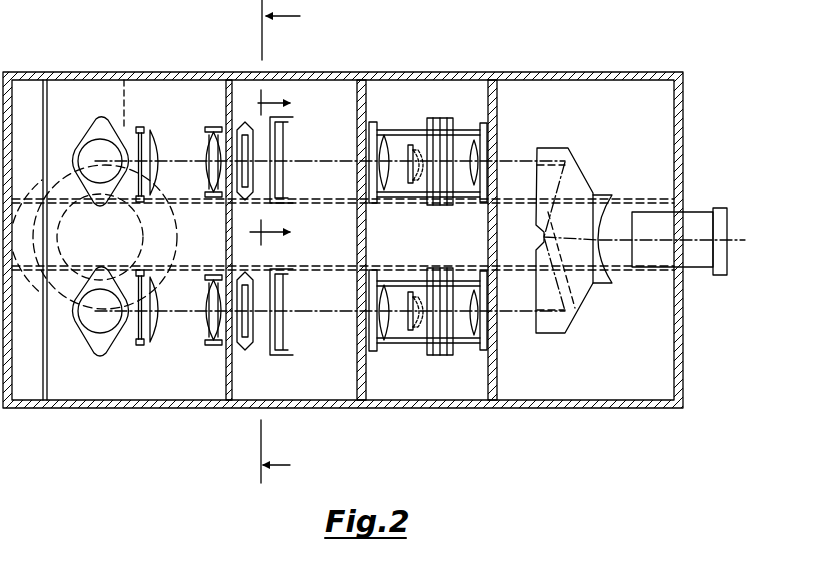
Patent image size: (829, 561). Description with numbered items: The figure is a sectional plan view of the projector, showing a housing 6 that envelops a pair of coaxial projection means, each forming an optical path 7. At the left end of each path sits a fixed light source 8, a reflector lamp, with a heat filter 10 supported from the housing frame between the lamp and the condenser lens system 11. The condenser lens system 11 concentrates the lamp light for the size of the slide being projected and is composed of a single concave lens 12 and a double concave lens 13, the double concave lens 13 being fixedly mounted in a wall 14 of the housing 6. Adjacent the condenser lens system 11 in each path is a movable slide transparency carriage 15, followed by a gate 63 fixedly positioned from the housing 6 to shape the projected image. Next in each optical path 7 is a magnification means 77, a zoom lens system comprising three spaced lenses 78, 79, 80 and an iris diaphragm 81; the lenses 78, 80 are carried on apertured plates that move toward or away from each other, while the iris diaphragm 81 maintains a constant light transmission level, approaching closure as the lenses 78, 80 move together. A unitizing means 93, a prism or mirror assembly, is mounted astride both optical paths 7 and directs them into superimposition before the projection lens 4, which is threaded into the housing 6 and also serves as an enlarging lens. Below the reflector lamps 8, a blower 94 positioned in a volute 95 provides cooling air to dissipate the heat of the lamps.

The projection lens 4 is at (706, 212).
The housing 6 is at (183, 72).
The optical path 7 is at (186, 163).
The fixed light source 8 is at (96, 150).
The heat filter 10 is at (139, 126).
The condenser lens system 11 is at (158, 380).
The single concave lens 12 is at (158, 150).
The double concave lens 13 is at (206, 135).
The wall 14 is at (228, 110).
The movable slide transparency carriage 15 is at (245, 119).
The gate 63 is at (298, 146).
The magnification means 77 is at (448, 114).
The lens 78 is at (383, 137).
The lens 79 is at (415, 145).
The lens 80 is at (474, 140).
The iris diaphragm 81 is at (412, 172).
The unitizing means 93 is at (584, 160).
The blower 94 is at (50, 198).
The volute 95 is at (47, 283).